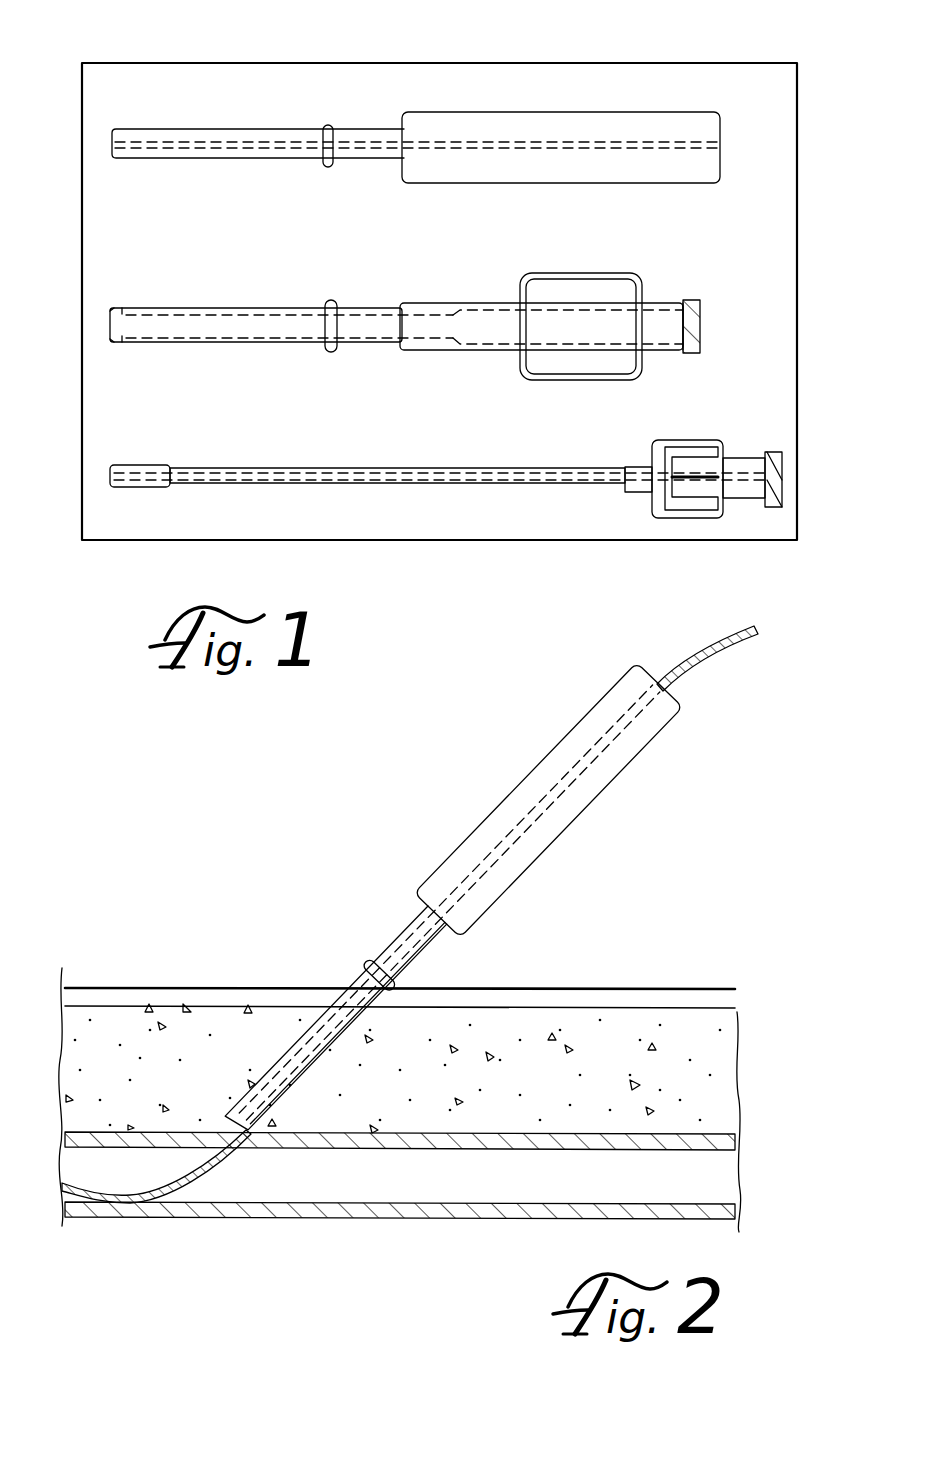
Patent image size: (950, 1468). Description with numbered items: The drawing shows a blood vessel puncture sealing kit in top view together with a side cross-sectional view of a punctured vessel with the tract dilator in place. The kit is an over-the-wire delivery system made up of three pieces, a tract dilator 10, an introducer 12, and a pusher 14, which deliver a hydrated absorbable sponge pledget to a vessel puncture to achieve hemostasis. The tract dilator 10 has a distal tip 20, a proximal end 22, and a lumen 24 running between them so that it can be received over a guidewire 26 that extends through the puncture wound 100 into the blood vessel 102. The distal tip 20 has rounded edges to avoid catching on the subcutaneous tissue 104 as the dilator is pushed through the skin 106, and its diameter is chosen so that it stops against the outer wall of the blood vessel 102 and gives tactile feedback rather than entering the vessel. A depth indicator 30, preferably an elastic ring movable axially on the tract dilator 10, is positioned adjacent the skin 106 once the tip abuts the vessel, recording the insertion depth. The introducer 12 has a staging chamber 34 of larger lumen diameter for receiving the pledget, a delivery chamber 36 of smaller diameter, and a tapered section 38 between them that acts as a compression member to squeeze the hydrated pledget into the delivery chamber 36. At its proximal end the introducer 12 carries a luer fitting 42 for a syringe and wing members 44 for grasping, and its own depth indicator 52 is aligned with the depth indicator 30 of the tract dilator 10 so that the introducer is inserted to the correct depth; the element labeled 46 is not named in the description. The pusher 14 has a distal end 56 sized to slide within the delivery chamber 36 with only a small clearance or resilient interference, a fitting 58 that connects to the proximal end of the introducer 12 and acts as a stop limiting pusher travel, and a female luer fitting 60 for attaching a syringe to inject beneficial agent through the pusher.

In FIG. 1, the tract dilator 10 is at (497, 92).
In FIG. 2, the tract dilator 10 is at (478, 776).
In FIG. 1, the introducer 12 is at (349, 266).
In FIG. 1, the pusher 14 is at (380, 454).
In FIG. 1, the distal tip 20 is at (118, 162).
In FIG. 2, the distal tip 20 is at (222, 1112).
In FIG. 1, the proximal end 22 is at (705, 112).
In FIG. 2, the proximal end 22 is at (675, 723).
In FIG. 1, the lumen 24 is at (608, 140).
In FIG. 2, the lumen 24 is at (548, 802).
In FIG. 2, the guidewire 26 is at (722, 632).
In FIG. 1, the depth indicator 30 is at (329, 125).
In FIG. 2, the depth indicator 30 is at (370, 958).
In FIG. 1, the staging chamber 34 is at (655, 320).
In FIG. 1, the delivery chamber 36 is at (248, 318).
In FIG. 1, the tapered section 38 is at (453, 312).
In FIG. 1, the luer fitting 42 is at (700, 345).
In FIG. 1, the wing members 44 is at (600, 273).
In FIG. 1, the dilator tip 46 is at (130, 345).
In FIG. 1, the depth indicator 52 is at (333, 352).
In FIG. 1, the distal end 56 is at (150, 490).
In FIG. 1, the fitting 58 is at (690, 445).
In FIG. 1, the female luer fitting 60 is at (785, 455).
In FIG. 2, the puncture wound 100 is at (216, 1158).
In FIG. 2, the blood vessel 102 is at (410, 1212).
In FIG. 2, the subcutaneous tissue 104 is at (607, 1030).
In FIG. 2, the skin 106 is at (580, 988).